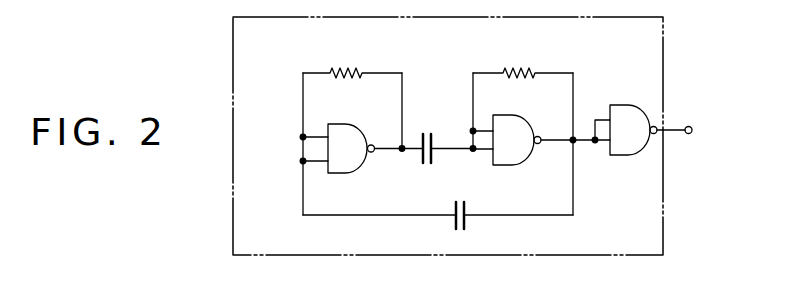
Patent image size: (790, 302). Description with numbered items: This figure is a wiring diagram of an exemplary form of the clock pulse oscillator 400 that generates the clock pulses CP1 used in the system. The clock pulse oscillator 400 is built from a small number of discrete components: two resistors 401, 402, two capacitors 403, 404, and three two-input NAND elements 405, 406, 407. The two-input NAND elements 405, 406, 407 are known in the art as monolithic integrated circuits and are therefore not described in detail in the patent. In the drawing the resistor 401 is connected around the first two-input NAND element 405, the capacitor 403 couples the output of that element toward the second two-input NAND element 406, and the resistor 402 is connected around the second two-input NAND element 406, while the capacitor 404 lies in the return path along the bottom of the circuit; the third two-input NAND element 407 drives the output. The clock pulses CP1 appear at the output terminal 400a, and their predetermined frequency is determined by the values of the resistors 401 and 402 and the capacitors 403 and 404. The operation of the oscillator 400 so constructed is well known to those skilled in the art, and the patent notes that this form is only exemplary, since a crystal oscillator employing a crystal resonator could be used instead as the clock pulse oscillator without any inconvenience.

The clock pulse oscillator 400 is at (663, 66).
The output terminal 400a is at (692, 131).
The resistor 401 is at (348, 71).
The resistor 402 is at (519, 71).
The capacitor 403 is at (427, 130).
The capacitor 404 is at (466, 209).
The two-input NAND element 405 is at (360, 172).
The two-input NAND element 406 is at (534, 129).
The two-input NAND element 407 is at (637, 104).